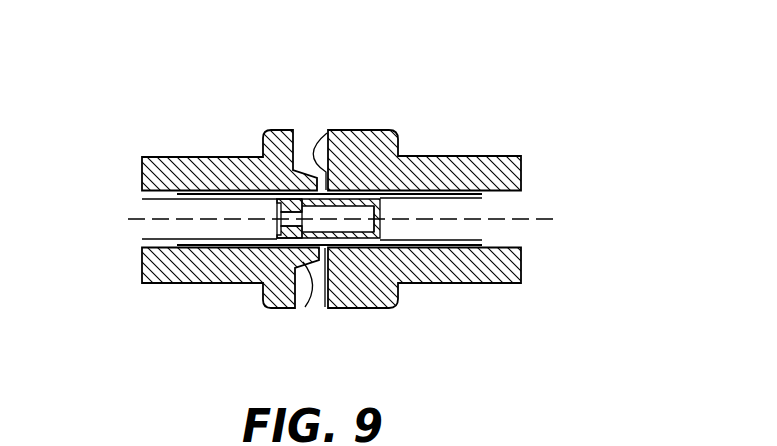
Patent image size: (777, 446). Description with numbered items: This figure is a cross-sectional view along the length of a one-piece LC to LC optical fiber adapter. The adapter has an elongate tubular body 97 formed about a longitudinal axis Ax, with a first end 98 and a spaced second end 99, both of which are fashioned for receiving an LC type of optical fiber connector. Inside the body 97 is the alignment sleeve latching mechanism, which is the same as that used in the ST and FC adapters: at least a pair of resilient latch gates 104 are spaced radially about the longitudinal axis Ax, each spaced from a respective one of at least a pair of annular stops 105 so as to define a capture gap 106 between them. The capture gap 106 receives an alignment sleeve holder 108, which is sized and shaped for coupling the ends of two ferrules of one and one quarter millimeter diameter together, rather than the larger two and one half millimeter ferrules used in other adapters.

The elongate tubular body 97 is at (408, 175).
The first end 98 is at (512, 204).
The second end 99 is at (142, 240).
The resilient latch gate 104 is at (303, 309).
The annular stop 105 is at (327, 133).
The capture gap 106 is at (326, 307).
The alignment sleeve holder 108 is at (383, 210).
The longitudinal axis Ax is at (535, 220).